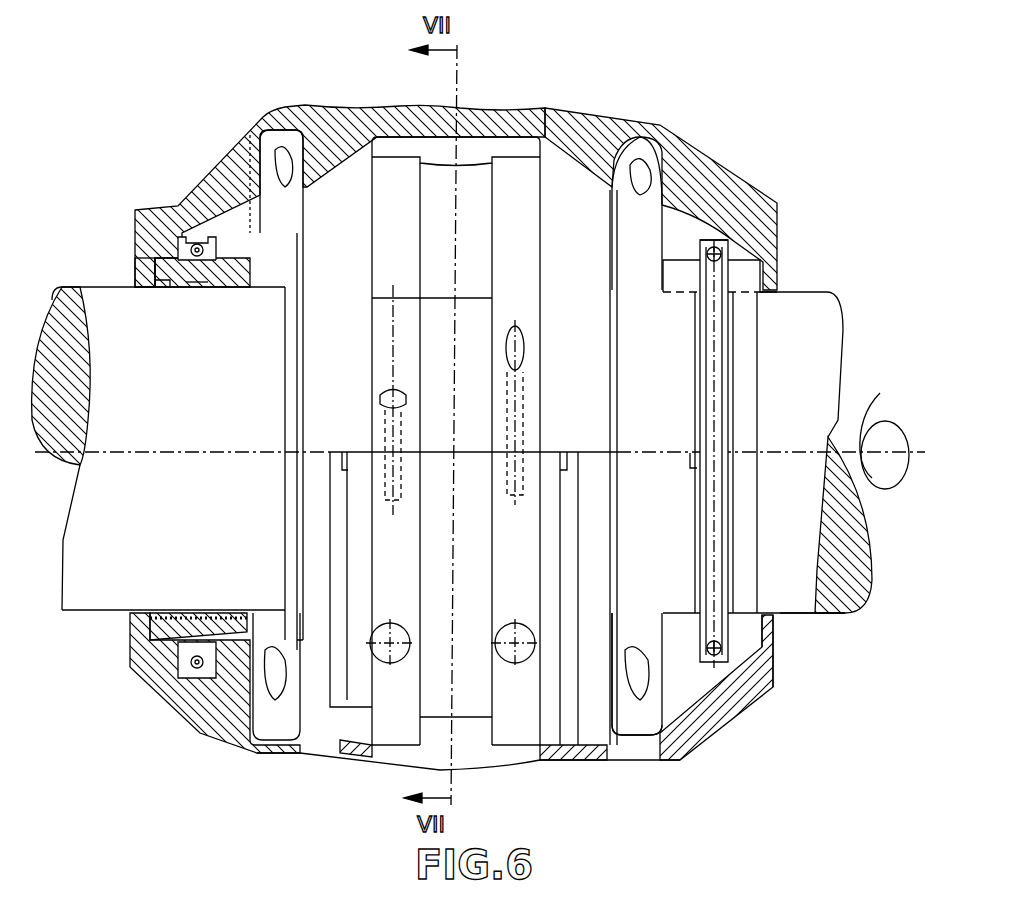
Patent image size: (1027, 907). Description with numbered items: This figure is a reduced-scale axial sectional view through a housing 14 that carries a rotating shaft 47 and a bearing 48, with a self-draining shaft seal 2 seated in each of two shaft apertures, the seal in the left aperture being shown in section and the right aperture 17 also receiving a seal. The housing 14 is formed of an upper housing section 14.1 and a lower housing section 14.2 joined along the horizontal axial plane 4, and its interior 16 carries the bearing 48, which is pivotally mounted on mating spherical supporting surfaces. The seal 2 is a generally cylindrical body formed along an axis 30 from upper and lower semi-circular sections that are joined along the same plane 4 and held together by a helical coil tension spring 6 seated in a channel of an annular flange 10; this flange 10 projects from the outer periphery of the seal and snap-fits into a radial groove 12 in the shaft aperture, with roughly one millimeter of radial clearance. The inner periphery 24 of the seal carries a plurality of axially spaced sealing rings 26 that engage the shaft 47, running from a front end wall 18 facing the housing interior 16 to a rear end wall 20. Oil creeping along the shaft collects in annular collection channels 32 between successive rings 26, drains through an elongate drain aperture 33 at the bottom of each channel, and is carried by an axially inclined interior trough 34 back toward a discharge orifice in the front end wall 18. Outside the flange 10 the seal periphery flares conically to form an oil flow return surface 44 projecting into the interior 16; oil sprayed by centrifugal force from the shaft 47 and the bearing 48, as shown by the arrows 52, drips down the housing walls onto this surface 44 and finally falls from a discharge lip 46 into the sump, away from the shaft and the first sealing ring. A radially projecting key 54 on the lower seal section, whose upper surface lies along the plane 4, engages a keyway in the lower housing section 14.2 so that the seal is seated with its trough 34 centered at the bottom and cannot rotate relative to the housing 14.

The self-draining shaft seal 2 is at (178, 257).
The horizontal axial plane 4 is at (317, 450).
The helical coil tension spring 6 is at (201, 240).
The annular flange 10 is at (187, 240).
The radial groove 12 is at (197, 237).
The housing 14 is at (690, 737).
The upper housing section 14.1 is at (678, 153).
The lower housing section 14.2 is at (750, 700).
The housing interior 16 is at (265, 150).
The shaft aperture 17 is at (760, 638).
The front end wall 18 is at (282, 262).
The rear end wall 20 is at (133, 277).
The inner periphery 24 is at (193, 290).
The sealing rings 26 is at (158, 290).
The axis 30 is at (884, 423).
The annular collection channels 32 is at (213, 290).
The drain aperture 33 is at (163, 610).
The interior trough 34 is at (273, 653).
The oil flow return surface 44 is at (237, 260).
The discharge lip 46 is at (620, 760).
The rotating shaft 47 is at (807, 603).
The bearing 48 is at (345, 190).
The arrows 52 is at (285, 173).
The key 54 is at (690, 462).